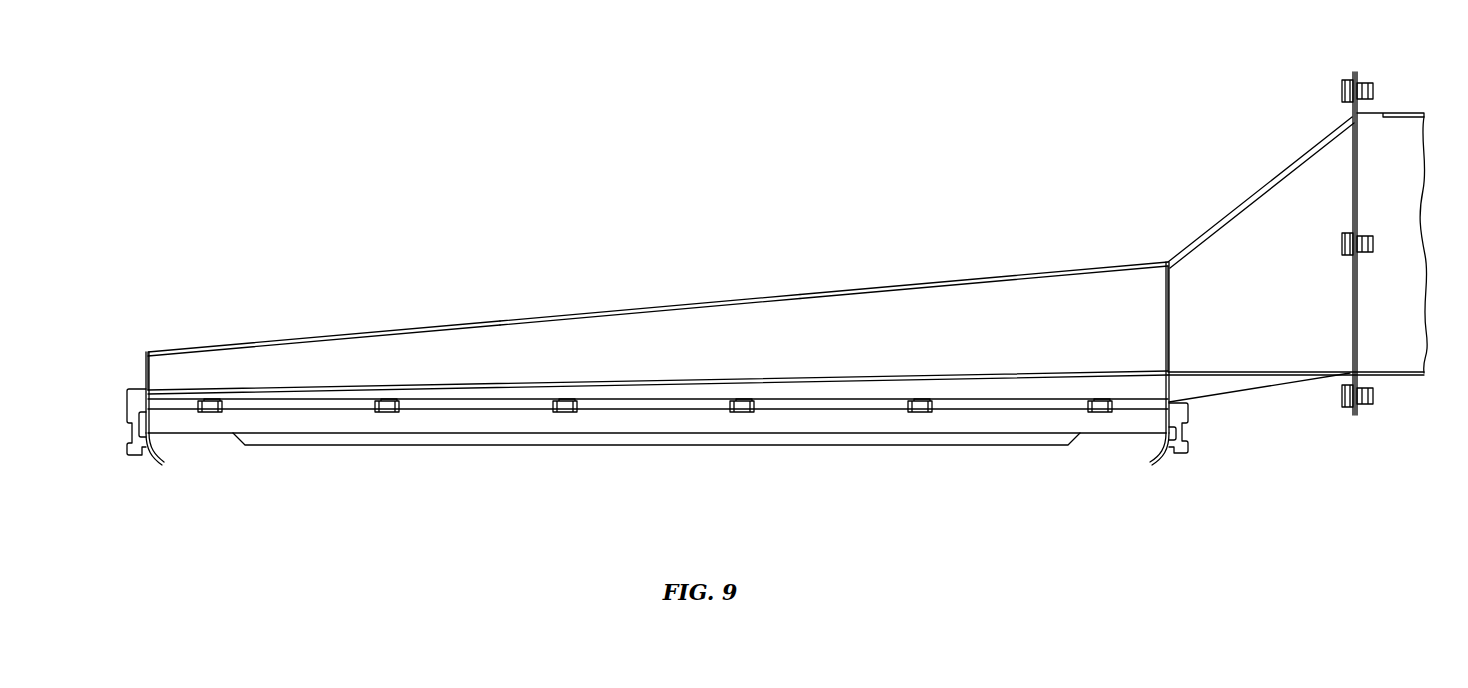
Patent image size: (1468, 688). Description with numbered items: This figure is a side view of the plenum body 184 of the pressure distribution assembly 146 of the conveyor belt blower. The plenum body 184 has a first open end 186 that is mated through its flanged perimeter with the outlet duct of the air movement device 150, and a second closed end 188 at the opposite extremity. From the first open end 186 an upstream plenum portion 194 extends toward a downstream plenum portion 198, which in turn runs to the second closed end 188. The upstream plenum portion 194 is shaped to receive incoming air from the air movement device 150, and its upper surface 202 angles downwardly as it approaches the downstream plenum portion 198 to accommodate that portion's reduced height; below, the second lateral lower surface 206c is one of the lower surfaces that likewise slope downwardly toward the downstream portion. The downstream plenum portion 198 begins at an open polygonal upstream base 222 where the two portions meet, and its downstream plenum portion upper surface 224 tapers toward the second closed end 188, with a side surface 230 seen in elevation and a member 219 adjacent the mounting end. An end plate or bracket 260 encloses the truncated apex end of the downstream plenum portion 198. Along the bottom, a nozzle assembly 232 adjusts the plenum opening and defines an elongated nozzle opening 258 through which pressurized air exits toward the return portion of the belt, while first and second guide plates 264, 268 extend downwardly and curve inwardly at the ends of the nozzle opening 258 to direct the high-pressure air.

The pressure distribution assembly 146 is at (504, 268).
The air movement device 150 is at (1403, 104).
The plenum body 184 is at (455, 322).
The first open end 186 is at (1350, 117).
The second closed end 188 is at (148, 352).
The upstream plenum portion 194 is at (1256, 178).
The downstream plenum portion 198 is at (942, 275).
The upper surface 202 is at (1308, 148).
The second lateral lower surface 206c is at (1218, 393).
The horizontal member 219 is at (1280, 352).
The open polygonal upstream base 222 is at (1166, 262).
The downstream plenum portion upper surface 224 is at (666, 304).
The side panel 230 is at (845, 330).
The nozzle assembly 232 is at (360, 442).
The nozzle opening 258 is at (590, 442).
The end plate or bracket 260 is at (146, 376).
The first guide plate 264 is at (1157, 454).
The second guide plate 268 is at (160, 454).